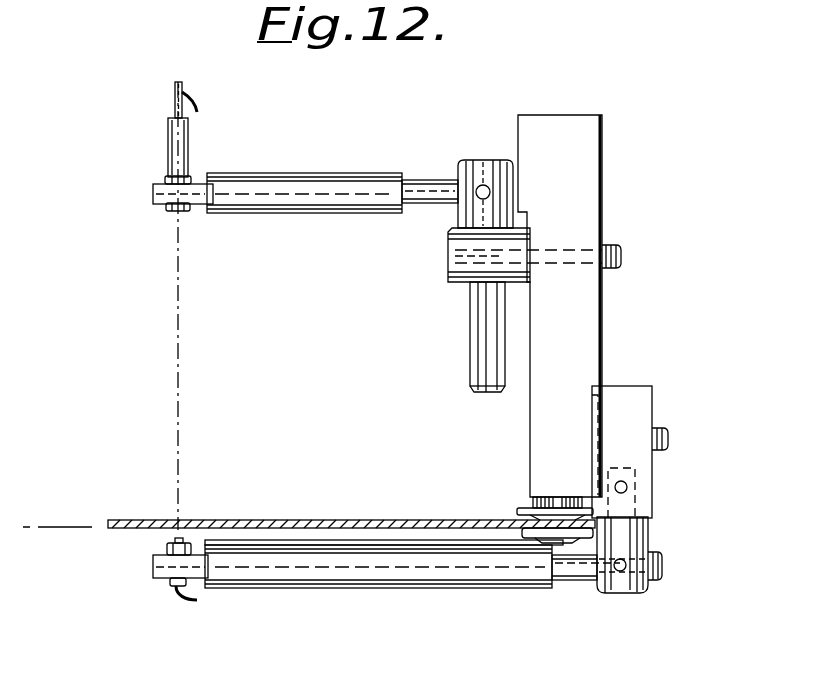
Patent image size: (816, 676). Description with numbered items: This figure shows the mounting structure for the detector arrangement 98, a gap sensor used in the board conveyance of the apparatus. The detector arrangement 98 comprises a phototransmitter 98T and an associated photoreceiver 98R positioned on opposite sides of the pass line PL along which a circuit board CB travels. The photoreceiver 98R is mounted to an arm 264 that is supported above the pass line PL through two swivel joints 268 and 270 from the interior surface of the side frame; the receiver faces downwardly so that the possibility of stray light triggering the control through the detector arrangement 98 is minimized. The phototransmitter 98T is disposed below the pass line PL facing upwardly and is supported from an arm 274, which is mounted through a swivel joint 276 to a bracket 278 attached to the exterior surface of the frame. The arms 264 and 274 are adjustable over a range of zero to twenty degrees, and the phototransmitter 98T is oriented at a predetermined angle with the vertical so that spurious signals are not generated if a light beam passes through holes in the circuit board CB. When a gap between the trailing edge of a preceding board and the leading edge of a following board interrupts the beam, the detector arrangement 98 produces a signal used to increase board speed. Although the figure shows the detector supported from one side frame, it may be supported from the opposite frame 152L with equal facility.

The detector arrangement 98 is at (150, 351).
The photoreceiver 98R is at (173, 213).
The phototransmitter 98T is at (168, 546).
The arm 264 is at (303, 200).
The swivel joint 268 is at (485, 172).
The swivel joint 270 is at (468, 253).
The frame 152L is at (585, 186).
The bracket 278 is at (632, 459).
The swivel joint 276 is at (620, 585).
The arm 274 is at (350, 568).
The pass line PL is at (68, 524).
The circuit board CB is at (350, 522).